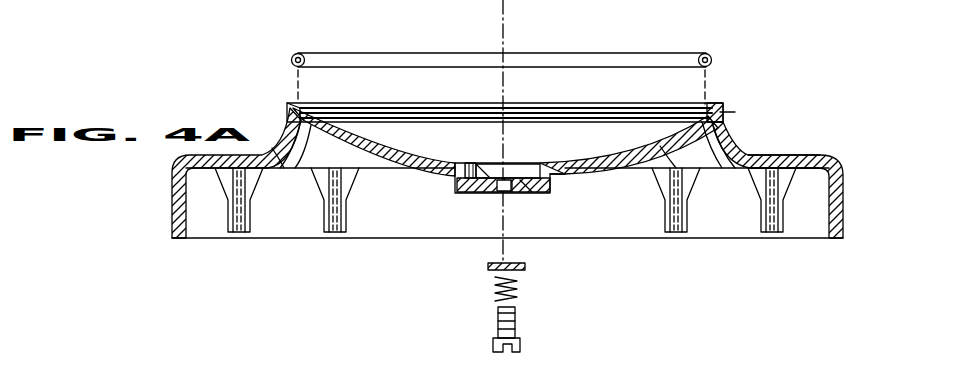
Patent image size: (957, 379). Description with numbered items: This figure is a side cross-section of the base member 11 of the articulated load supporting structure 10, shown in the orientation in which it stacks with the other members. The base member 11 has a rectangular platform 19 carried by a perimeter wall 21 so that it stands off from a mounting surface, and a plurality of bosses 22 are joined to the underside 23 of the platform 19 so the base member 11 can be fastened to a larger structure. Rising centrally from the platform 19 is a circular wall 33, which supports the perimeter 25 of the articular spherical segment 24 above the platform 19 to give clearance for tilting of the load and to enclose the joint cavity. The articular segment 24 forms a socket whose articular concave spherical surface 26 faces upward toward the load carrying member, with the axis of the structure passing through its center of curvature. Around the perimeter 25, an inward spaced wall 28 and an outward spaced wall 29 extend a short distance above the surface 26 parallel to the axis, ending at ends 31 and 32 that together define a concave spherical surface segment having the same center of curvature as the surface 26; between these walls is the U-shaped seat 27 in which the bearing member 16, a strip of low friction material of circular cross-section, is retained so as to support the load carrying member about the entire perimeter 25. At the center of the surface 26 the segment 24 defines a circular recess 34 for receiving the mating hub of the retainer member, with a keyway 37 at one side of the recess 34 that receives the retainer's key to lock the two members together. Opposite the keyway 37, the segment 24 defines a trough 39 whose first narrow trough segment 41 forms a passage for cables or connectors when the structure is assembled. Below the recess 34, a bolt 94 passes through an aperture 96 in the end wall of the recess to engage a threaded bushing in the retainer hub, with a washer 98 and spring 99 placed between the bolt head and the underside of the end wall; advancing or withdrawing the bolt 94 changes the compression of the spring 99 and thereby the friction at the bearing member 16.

The articulated load supporting structure 10 is at (740, 112).
The base member 11 is at (833, 161).
The bearing member 16 is at (291, 58).
The rectangular platform 19 is at (770, 153).
The perimeter wall 21 is at (840, 204).
The bosses 22 is at (227, 211).
The underside 23 is at (290, 172).
The articular spherical segment 24 is at (290, 90).
The perimeter 25 is at (540, 104).
The articular concave spherical surface 26 is at (400, 152).
The seat 27 is at (711, 103).
The inward spaced wall 28 is at (655, 119).
The outward spaced wall 29 is at (722, 107).
The end of inward wall 31 is at (393, 113).
The end of outward wall 32 is at (343, 107).
The circular wall 33 is at (722, 126).
The circular recess 34 is at (500, 163).
The keyway 37 is at (480, 161).
The trough 39 is at (568, 176).
The first narrow trough segment 41 is at (537, 191).
The bolt 94 is at (522, 345).
The aperture 96 is at (500, 191).
The washer 98 is at (526, 266).
The spring 99 is at (518, 289).